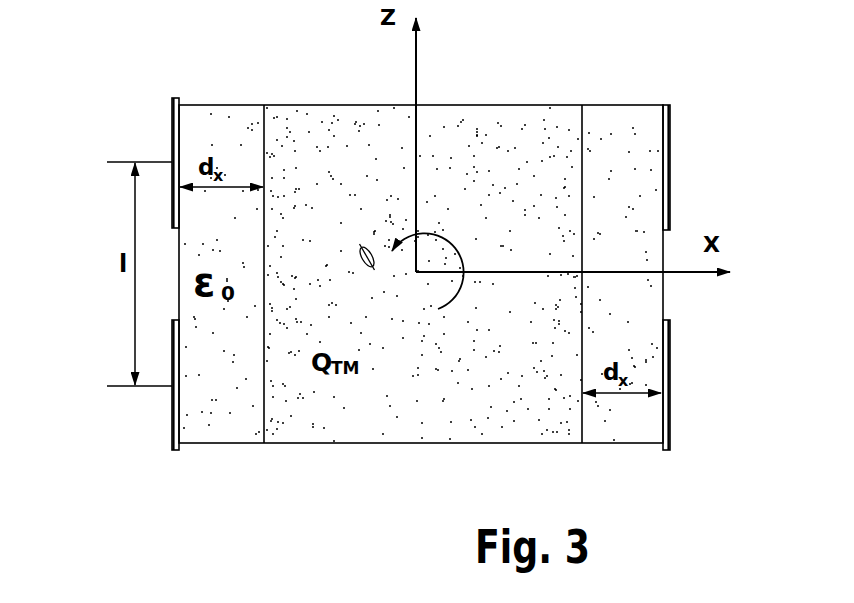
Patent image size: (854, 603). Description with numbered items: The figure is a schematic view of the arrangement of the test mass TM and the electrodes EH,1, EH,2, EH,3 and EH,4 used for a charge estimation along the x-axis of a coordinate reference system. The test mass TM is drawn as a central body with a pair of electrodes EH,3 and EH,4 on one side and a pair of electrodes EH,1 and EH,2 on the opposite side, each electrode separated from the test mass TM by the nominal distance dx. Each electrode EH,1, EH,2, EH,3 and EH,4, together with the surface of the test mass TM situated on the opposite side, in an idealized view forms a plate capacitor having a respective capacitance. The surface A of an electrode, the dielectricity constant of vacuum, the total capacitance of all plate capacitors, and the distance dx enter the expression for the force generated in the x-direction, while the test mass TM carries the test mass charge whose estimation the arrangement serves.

The electrode 1 is at (670, 368).
The electrode 2 is at (670, 163).
The electrode 3 is at (172, 131).
The electrode 4 is at (172, 414).
The surface of an electrode A is at (640, 125).
The test mass TM is at (333, 445).